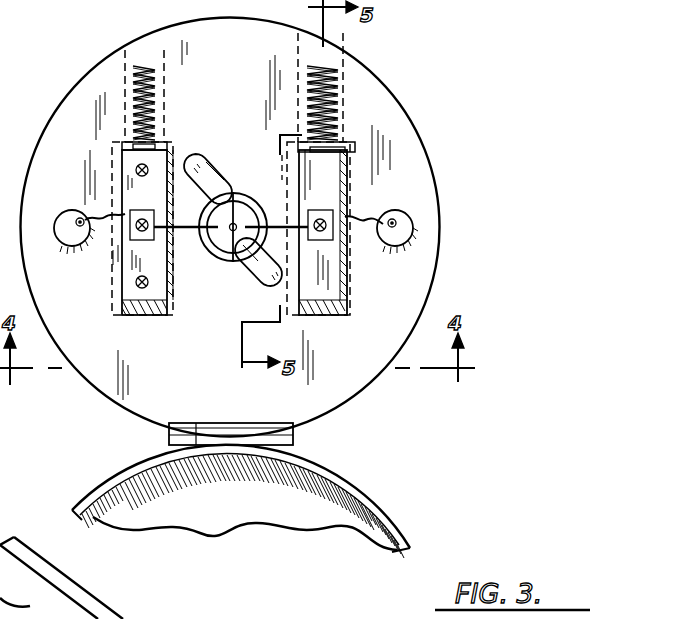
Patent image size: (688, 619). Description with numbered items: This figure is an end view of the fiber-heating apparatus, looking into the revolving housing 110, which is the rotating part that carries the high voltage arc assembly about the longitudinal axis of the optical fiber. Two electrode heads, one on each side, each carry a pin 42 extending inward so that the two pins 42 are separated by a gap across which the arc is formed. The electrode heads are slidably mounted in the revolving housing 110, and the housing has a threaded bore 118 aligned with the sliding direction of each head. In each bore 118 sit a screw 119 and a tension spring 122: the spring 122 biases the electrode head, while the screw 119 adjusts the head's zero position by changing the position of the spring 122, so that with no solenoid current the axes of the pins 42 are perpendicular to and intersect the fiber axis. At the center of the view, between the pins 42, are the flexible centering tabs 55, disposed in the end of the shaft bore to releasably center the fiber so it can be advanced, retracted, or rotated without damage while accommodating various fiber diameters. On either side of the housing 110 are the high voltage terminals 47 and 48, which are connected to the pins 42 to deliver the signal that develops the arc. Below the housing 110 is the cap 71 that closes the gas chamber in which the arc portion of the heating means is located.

The revolving housing 110 is at (398, 292).
The pin 42 is at (188, 233).
The centering tabs 55 is at (212, 164).
The high voltage terminal 47 is at (410, 223).
The high voltage terminal 48 is at (70, 247).
The cap 71 is at (355, 493).
The threaded bore 118 is at (326, 53).
The screw 119 is at (340, 74).
The tension spring 122 is at (345, 100).